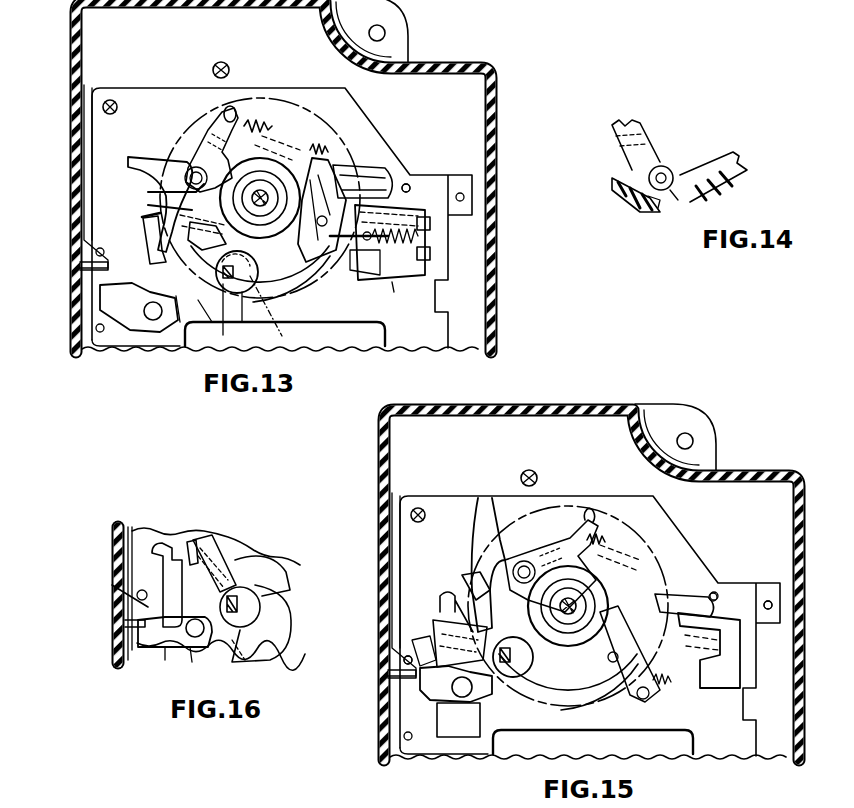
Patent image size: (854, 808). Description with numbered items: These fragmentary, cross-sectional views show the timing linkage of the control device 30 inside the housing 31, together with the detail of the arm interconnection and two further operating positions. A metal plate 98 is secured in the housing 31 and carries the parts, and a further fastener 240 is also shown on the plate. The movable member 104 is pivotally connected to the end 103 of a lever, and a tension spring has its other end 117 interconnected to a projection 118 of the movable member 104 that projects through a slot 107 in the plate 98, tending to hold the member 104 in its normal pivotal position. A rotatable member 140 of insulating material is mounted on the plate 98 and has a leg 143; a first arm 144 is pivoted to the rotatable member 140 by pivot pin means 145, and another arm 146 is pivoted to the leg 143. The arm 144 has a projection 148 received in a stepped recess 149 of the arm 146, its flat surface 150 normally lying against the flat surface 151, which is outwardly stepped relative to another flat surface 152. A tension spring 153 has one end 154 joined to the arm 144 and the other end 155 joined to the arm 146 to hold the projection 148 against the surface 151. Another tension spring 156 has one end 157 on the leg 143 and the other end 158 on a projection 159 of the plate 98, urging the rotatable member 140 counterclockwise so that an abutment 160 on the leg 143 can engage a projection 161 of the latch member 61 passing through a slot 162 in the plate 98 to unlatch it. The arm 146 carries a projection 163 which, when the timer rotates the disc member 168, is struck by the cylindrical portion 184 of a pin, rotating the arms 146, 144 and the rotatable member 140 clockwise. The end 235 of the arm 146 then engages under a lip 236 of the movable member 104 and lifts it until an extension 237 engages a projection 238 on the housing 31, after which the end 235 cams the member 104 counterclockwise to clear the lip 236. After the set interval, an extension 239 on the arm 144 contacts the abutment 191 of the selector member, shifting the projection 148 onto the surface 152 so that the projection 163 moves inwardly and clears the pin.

In FIG. 13, the latch assembly 30 is at (448, 31).
In FIG. 15, the latch assembly 30 is at (748, 433).
In FIG. 13, the housing 31 is at (497, 290).
In FIG. 16, the housing 31 is at (112, 556).
In FIG. 15, the housing 31 is at (564, 582).
In FIG. 13, the latch member 61 is at (395, 212).
In FIG. 13, the metal plate 98 is at (350, 108).
In FIG. 15, the metal plate 98 is at (584, 624).
In FIG. 16, the other end of the first lever 103 is at (200, 662).
In FIG. 15, the other end of the first lever 103 is at (476, 704).
In FIG. 13, the movable member 104 is at (146, 250).
In FIG. 16, the movable member 104 is at (162, 580).
In FIG. 15, the movable member 104 is at (440, 694).
In FIG. 13, the slot 107 is at (180, 213).
In FIG. 13, the other end of the tension spring 117 is at (214, 324).
In FIG. 13, the projection of the movable member 118 is at (182, 326).
In FIG. 13, the rotatable member 140 is at (278, 170).
In FIG. 15, the rotatable member 140 is at (590, 565).
In FIG. 13, the leg of the rotatable member 143 is at (360, 272).
In FIG. 13, the first arm 144 is at (160, 193).
In FIG. 14, the first arm 144 is at (622, 148).
In FIG. 16, the first arm 144 is at (260, 568).
In FIG. 15, the first arm 144 is at (478, 575).
In FIG. 13, the pivot pin means 145 is at (205, 128).
In FIG. 13, the arm 146 is at (288, 288).
In FIG. 14, the arm 146 is at (730, 178).
In FIG. 16, the arm 146 is at (284, 630).
In FIG. 15, the arm 146 is at (595, 698).
In FIG. 13, the projection 148 is at (250, 262).
In FIG. 14, the projection 148 is at (667, 168).
In FIG. 13, the stepped recess 149 is at (282, 334).
In FIG. 14, the stepped recess 149 is at (680, 175).
In FIG. 14, the flat surface 150 is at (622, 180).
In FIG. 14, the flat surface 151 is at (650, 205).
In FIG. 14, the flat surface 152 is at (678, 202).
In FIG. 13, the tension spring 153 is at (258, 126).
In FIG. 15, the tension spring 153 is at (615, 545).
In FIG. 13, the end of the tension spring 154 is at (236, 104).
In FIG. 13, the other end of the tension spring 155 is at (325, 148).
In FIG. 13, the tension spring 156 is at (392, 290).
In FIG. 15, the tension spring 156 is at (694, 690).
In FIG. 13, the end of the tension spring 157 is at (384, 246).
In FIG. 13, the other end of the tension spring 158 is at (432, 253).
In FIG. 13, the projection of the plate 159 is at (432, 230).
In FIG. 13, the abutment 160 is at (346, 168).
In FIG. 13, the projection of the latch member 161 is at (380, 165).
In FIG. 13, the slot 162 is at (396, 294).
In FIG. 13, the projection 163 is at (242, 300).
In FIG. 16, the projection 163 is at (250, 600).
In FIG. 15, the projection 163 is at (534, 657).
In FIG. 13, the disc member 168 is at (314, 96).
In FIG. 16, the disc member 168 is at (238, 668).
In FIG. 15, the disc member 168 is at (612, 506).
In FIG. 13, the cylindrical portion 184 is at (262, 322).
In FIG. 16, the cylindrical portion 184 is at (252, 608).
In FIG. 15, the cylindrical portion 184 is at (593, 712).
In FIG. 13, the projection 191 is at (227, 63).
In FIG. 15, the projection 191 is at (511, 470).
In FIG. 13, the end of the arm 235 is at (228, 258).
In FIG. 16, the end of the arm 235 is at (214, 562).
In FIG. 15, the end of the arm 235 is at (445, 624).
In FIG. 16, the lip 236 is at (194, 545).
In FIG. 15, the lip 236 is at (458, 590).
In FIG. 13, the extension 237 is at (104, 288).
In FIG. 16, the extension 237 is at (152, 664).
In FIG. 15, the extension 237 is at (412, 684).
In FIG. 13, the projection 238 is at (88, 266).
In FIG. 16, the projection 238 is at (125, 627).
In FIG. 15, the projection 238 is at (396, 672).
In FIG. 13, the extension 239 is at (165, 158).
In FIG. 15, the extension 239 is at (485, 530).
In FIG. 13, the screw 240 is at (110, 100).
In FIG. 15, the screw 240 is at (436, 498).